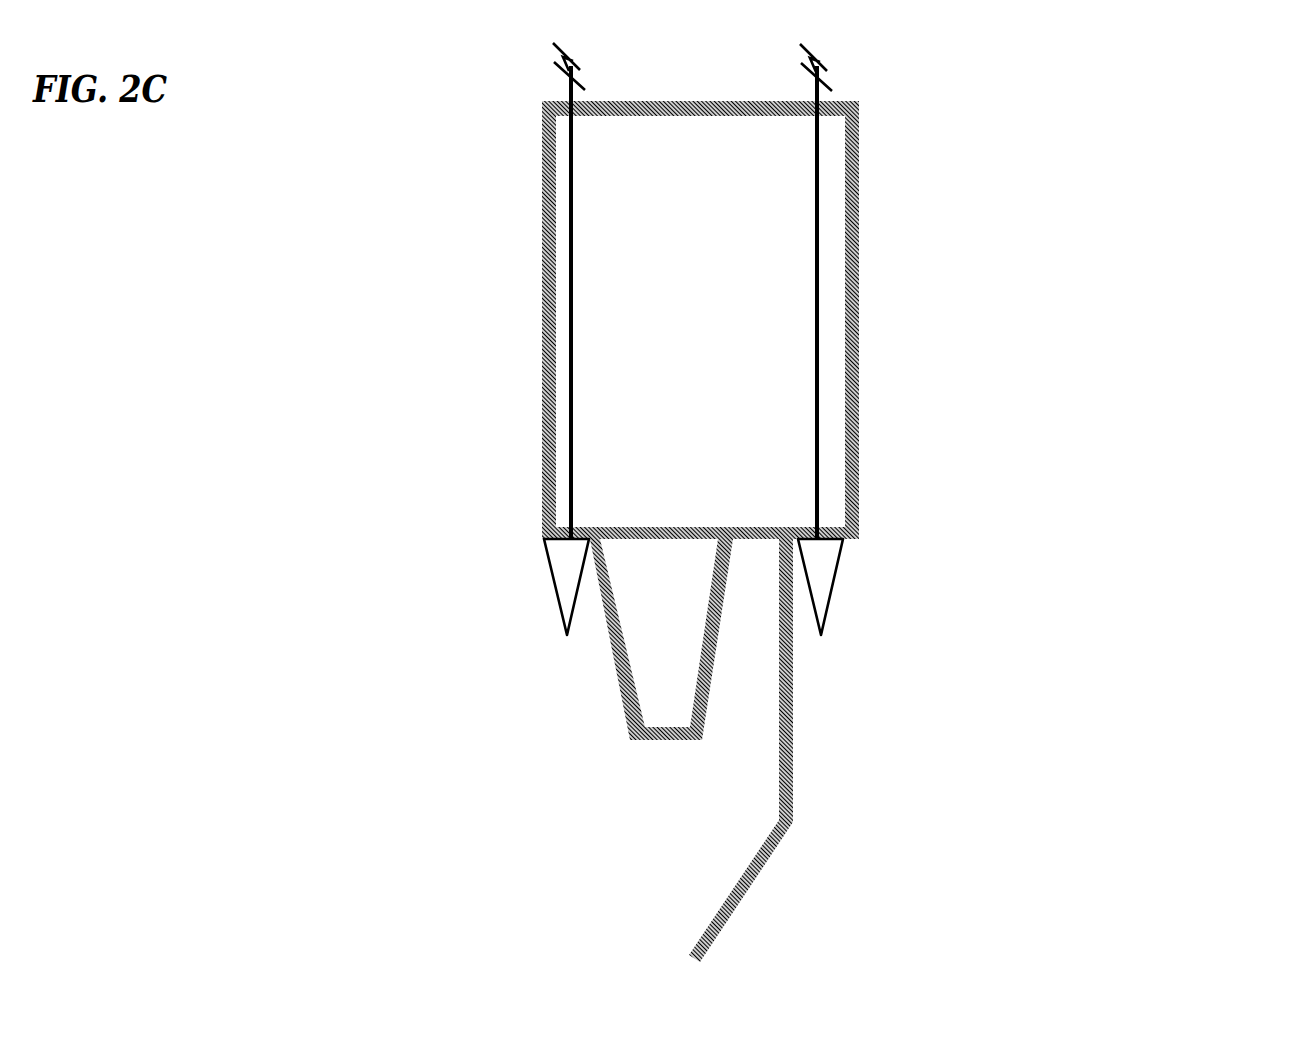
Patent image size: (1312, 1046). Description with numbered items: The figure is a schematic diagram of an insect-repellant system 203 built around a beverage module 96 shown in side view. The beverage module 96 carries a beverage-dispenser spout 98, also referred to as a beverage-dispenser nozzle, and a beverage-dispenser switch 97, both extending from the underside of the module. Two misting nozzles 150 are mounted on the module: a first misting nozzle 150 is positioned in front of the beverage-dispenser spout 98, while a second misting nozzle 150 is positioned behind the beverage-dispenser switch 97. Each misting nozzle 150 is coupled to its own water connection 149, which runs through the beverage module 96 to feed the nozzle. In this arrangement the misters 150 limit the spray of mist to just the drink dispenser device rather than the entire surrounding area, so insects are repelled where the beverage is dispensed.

The insect-repellant system 203 is at (1236, 108).
The beverage module 96 is at (860, 208).
The water connection 149 is at (572, 290).
The misting nozzle 150 is at (557, 603).
The beverage-dispenser spout 98 is at (663, 740).
The beverage-dispenser switch 97 is at (723, 913).